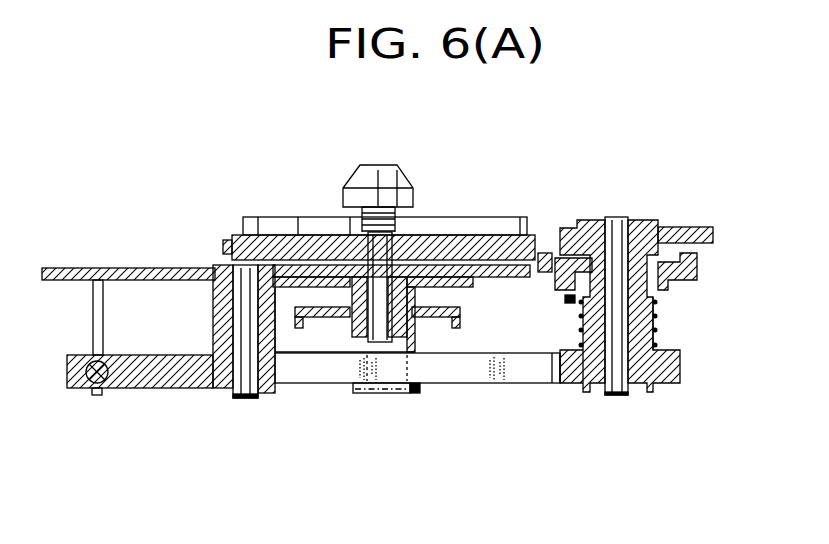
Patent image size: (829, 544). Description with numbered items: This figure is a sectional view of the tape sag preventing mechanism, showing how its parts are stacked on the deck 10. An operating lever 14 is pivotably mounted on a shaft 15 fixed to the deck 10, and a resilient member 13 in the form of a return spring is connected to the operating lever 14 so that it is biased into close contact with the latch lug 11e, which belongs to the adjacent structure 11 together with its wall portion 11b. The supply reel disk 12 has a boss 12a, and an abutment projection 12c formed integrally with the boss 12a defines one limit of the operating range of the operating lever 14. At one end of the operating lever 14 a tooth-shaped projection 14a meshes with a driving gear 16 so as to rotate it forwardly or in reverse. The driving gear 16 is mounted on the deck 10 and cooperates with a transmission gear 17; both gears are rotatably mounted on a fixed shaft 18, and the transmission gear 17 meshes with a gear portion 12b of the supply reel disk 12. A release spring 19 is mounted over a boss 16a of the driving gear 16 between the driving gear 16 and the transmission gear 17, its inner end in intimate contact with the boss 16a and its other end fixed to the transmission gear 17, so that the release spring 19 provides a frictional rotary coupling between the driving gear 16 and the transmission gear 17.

The deck 10 is at (77, 265).
The frame member 11 is at (323, 321).
The frame upper wall 11b is at (320, 283).
The latch lug 11e is at (418, 395).
The supply reel disk 12 is at (500, 216).
The boss 12a is at (352, 327).
The gear portion 12b is at (548, 232).
The abutment projection 12c is at (373, 394).
The resilient member 13 is at (73, 388).
The operating lever 14 is at (173, 388).
The tooth-shaped projection 14a is at (552, 384).
The shaft 15 is at (243, 399).
The driving gear 16 is at (679, 368).
The boss 16a is at (656, 328).
The transmission gear 17 is at (692, 274).
The fixed shaft 18 is at (623, 216).
The release spring 19 is at (580, 320).